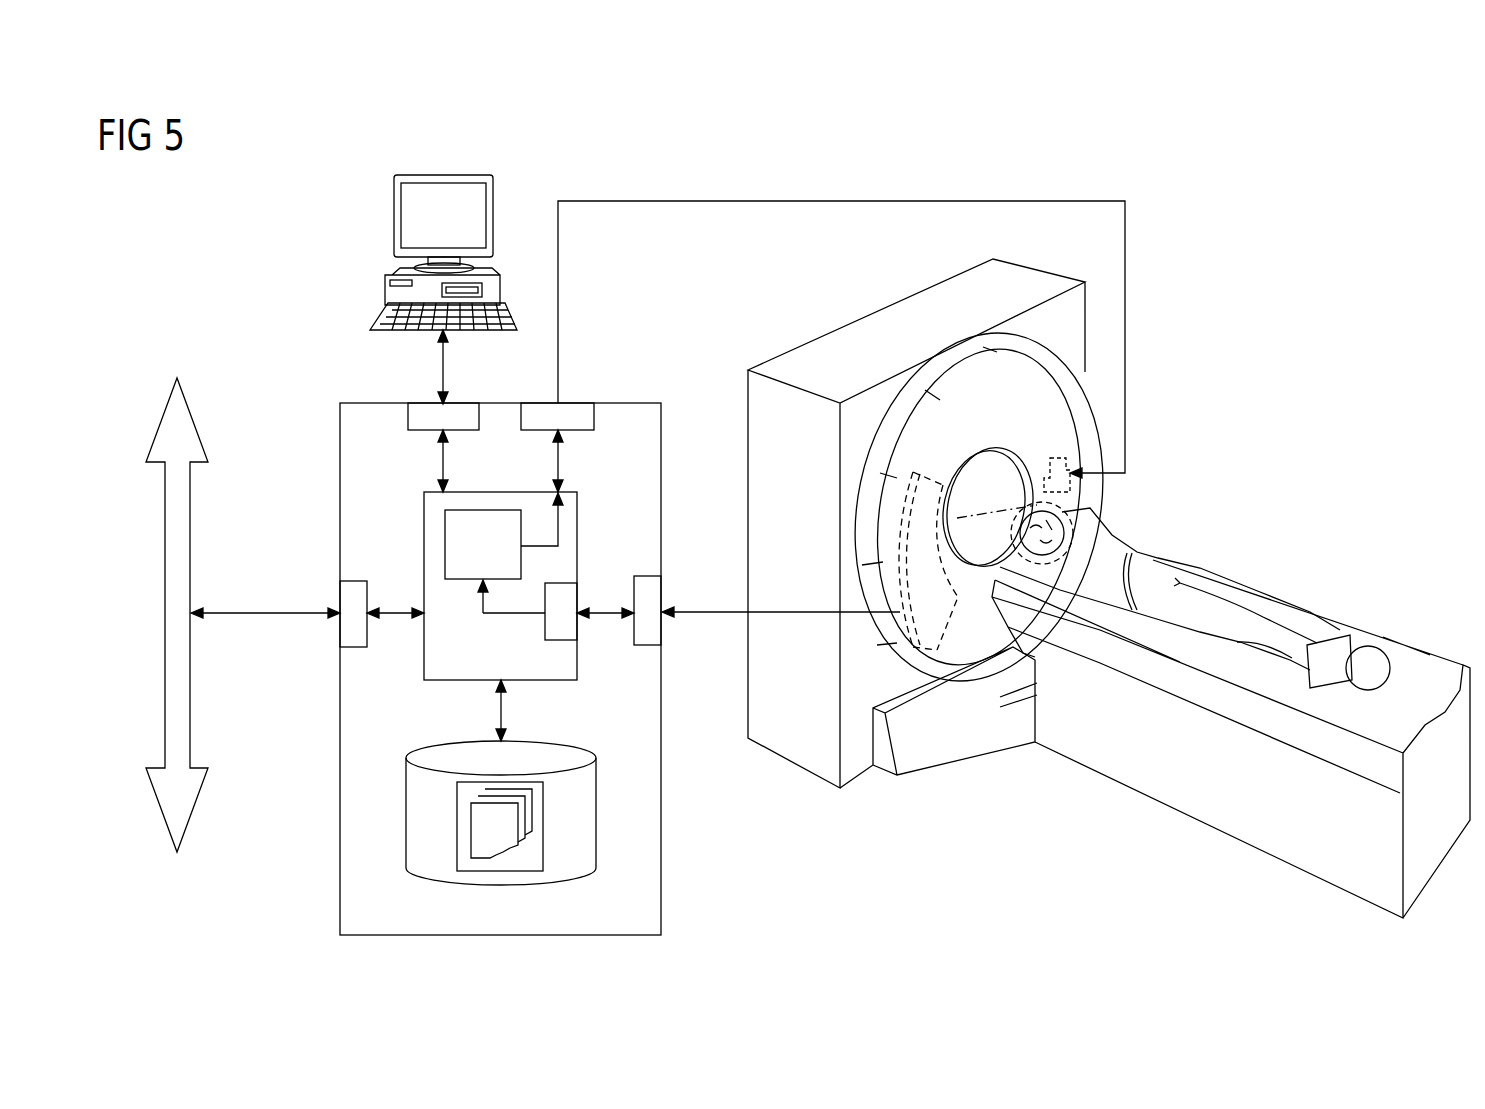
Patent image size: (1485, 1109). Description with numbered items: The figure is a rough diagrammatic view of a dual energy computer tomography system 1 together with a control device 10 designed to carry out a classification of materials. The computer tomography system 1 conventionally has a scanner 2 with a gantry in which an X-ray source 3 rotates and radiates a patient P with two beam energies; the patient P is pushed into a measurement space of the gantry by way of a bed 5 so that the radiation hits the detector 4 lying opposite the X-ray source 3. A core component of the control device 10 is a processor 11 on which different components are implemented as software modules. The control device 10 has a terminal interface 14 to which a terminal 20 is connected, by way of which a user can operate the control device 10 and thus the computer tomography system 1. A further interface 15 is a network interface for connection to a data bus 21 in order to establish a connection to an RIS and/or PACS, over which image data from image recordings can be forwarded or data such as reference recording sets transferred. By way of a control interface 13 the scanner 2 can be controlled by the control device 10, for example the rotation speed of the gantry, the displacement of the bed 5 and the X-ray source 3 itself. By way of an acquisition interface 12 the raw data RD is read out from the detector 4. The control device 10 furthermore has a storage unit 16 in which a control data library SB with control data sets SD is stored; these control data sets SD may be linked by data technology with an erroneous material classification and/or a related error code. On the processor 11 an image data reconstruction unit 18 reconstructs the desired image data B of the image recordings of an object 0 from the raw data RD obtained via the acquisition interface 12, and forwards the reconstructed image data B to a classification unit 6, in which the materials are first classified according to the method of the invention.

The computer tomography system 1 is at (1345, 390).
The scanner 2 is at (897, 300).
The X-ray source 3 is at (1060, 452).
The detector 4 is at (947, 617).
The bed 5 is at (1222, 820).
The classification unit 6 is at (462, 582).
The control device 10 is at (501, 405).
The processor 11 is at (500, 500).
The acquisition interface 12 is at (646, 640).
The control interface 13 is at (575, 413).
The terminal interface 14 is at (428, 413).
The network interface 15 is at (352, 590).
The storage unit 16 is at (532, 754).
The image data reconstruction unit 18 is at (570, 598).
The terminal 20 is at (393, 222).
The data bus 21 is at (165, 612).
The object 0 is at (1082, 516).
The patient P is at (1168, 525).
The raw data RD is at (781, 584).
The control data sets SD is at (470, 831).
The control data library SB is at (501, 872).
The image data B is at (514, 616).